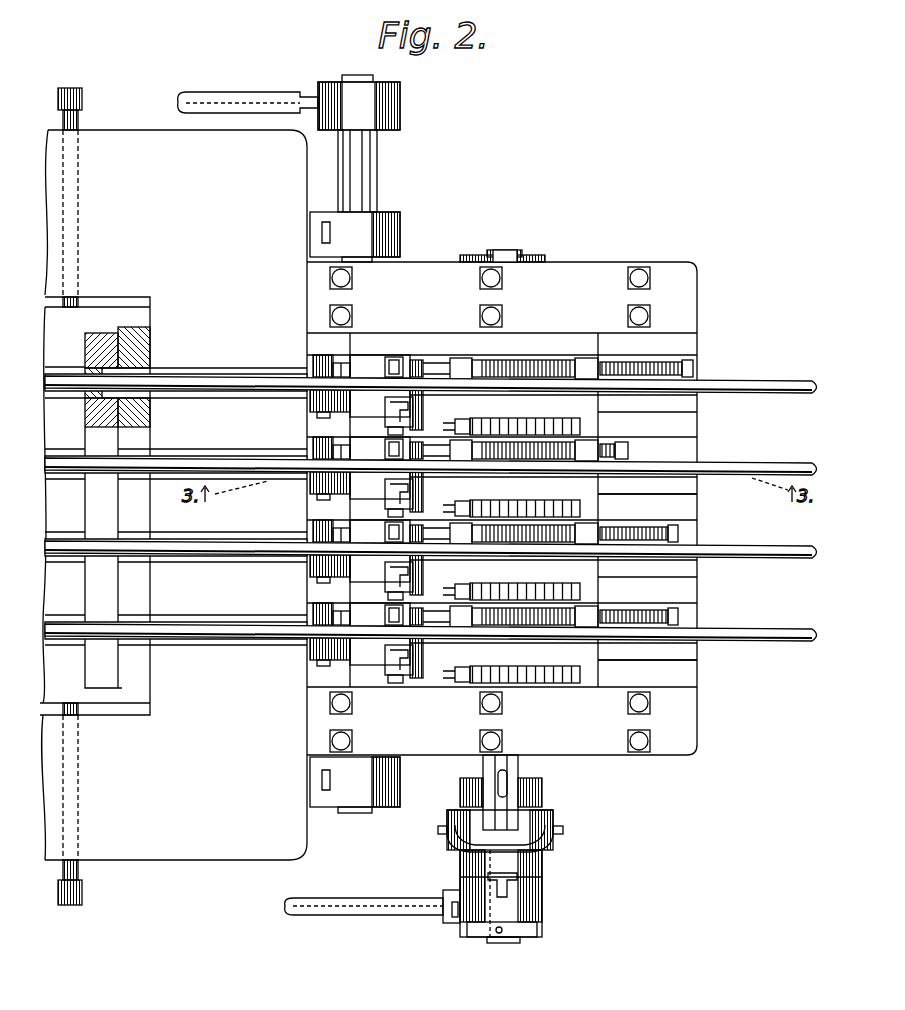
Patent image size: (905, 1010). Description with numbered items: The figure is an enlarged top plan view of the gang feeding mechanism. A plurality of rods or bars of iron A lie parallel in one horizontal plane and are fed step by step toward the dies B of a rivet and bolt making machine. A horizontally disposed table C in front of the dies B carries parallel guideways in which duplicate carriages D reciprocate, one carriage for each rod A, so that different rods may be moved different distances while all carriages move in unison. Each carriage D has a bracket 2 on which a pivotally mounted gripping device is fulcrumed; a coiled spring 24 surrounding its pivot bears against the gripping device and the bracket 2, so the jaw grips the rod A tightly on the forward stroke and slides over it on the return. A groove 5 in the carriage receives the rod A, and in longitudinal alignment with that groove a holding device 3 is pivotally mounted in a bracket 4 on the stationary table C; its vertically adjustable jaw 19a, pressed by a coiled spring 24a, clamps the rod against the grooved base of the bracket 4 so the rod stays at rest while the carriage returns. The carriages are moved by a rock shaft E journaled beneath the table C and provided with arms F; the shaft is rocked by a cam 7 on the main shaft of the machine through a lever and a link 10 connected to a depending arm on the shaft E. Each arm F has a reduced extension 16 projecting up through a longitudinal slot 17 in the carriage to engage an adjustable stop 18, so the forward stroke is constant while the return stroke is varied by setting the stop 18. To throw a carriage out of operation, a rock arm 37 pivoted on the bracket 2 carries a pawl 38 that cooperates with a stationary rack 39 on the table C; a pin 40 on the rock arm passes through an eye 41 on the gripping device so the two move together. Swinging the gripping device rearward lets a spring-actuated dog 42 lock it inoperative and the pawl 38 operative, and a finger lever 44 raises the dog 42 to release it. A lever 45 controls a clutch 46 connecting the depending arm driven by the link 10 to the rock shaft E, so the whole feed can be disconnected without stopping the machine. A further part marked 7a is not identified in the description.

The bracket 2 is at (433, 617).
The holding device 3 is at (317, 382).
The bracket 4 is at (313, 487).
The groove 5 is at (514, 626).
The cam 7 is at (428, 664).
The nut 7a is at (396, 600).
The link 10 is at (383, 900).
The reduced extension 16 is at (470, 366).
The longitudinal slot 17 is at (512, 368).
The adjustable stop 18 is at (566, 368).
The vertically adjustable jaw 19a is at (313, 620).
The coiled spring 24 is at (386, 537).
The coiled spring 24a is at (313, 455).
The rock arm 37 is at (457, 506).
The pawl 38 is at (490, 506).
The stationary rack 39 is at (565, 516).
The pin 40 is at (410, 403).
The eye 41 is at (418, 378).
The spring-actuated dog 42 is at (395, 400).
The finger lever 44 is at (400, 648).
The lever 45 is at (505, 787).
The clutch 46 is at (545, 857).
The rods or bars A is at (772, 395).
The dies B is at (63, 397).
The table C is at (683, 278).
The carriages D is at (592, 495).
The rock shaft E is at (500, 944).
The arms F is at (478, 616).